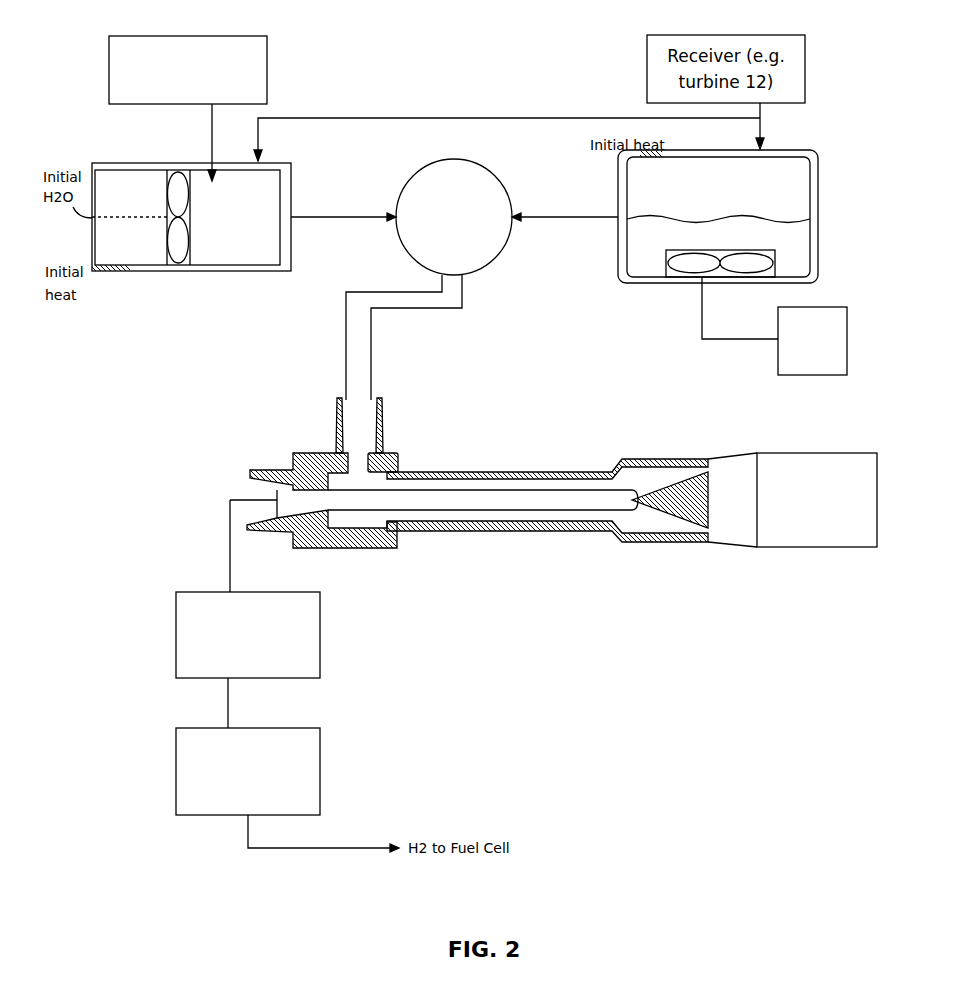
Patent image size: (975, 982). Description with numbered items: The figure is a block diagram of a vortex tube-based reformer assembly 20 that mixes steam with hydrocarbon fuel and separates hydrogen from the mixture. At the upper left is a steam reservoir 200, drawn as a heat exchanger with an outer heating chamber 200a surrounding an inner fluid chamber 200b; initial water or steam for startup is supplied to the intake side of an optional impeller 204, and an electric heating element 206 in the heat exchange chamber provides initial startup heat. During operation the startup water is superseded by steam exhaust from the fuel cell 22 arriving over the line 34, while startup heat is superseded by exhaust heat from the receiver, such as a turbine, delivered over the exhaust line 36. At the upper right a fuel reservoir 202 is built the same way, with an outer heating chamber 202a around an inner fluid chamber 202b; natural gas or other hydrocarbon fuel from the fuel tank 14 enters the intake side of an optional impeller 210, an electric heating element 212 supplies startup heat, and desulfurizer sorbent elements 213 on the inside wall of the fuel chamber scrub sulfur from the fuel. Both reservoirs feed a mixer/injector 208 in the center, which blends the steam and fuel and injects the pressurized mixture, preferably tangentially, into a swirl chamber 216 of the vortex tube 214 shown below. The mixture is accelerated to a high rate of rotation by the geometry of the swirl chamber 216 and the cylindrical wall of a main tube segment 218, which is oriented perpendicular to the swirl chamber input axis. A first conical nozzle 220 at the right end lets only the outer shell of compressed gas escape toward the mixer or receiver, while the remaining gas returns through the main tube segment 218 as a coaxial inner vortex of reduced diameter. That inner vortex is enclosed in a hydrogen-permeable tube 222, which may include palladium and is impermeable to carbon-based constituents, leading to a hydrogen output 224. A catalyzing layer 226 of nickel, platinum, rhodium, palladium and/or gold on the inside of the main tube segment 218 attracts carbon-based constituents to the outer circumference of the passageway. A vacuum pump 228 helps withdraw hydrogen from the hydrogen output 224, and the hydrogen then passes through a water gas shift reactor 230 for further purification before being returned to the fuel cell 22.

The fuel cell 22 is at (232, 36).
The line 34 is at (213, 137).
The exhaust line 36 is at (762, 133).
The vortex tube-based reformer assembly 20 is at (360, 168).
The steam reservoir 200 is at (213, 221).
The outer heating chamber 200a is at (270, 270).
The inner fluid chamber 200b is at (240, 264).
The impeller 204 is at (167, 182).
The electric heating element 206 is at (104, 272).
The mixer/injector reservoir 208 is at (492, 180).
The fuel reservoir 202 is at (722, 222).
The outer heating chamber 202a is at (800, 150).
The inner fluid chamber 202b is at (806, 172).
The electric heating element 212 is at (638, 156).
The desulfurizer sorbent elements 213 is at (746, 184).
The impeller 210 is at (672, 272).
The fuel tank 14 is at (832, 307).
The vortex tube 214 is at (547, 494).
The swirl chamber 216 is at (385, 455).
The hydrogen output 224 is at (277, 490).
The catalyzing layer 226 is at (543, 472).
The hydrogen-permeable tube 222 is at (411, 512).
The main tube segment 218 is at (508, 531).
The first conical nozzle 220 is at (748, 455).
The vacuum pump 228 is at (268, 592).
The water gas shift reactor 230 is at (268, 728).